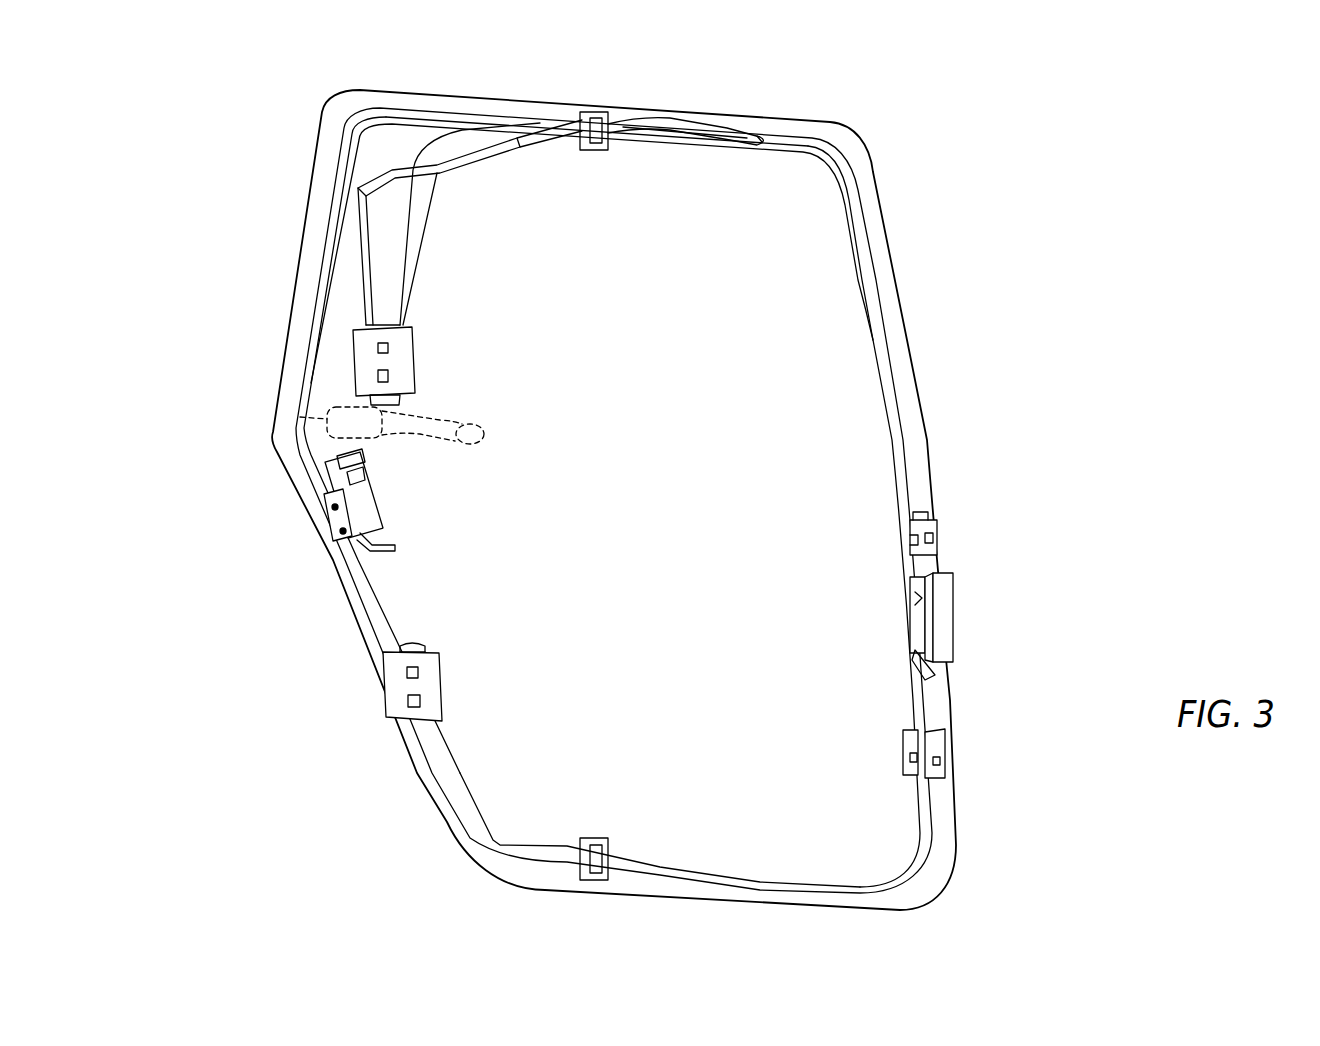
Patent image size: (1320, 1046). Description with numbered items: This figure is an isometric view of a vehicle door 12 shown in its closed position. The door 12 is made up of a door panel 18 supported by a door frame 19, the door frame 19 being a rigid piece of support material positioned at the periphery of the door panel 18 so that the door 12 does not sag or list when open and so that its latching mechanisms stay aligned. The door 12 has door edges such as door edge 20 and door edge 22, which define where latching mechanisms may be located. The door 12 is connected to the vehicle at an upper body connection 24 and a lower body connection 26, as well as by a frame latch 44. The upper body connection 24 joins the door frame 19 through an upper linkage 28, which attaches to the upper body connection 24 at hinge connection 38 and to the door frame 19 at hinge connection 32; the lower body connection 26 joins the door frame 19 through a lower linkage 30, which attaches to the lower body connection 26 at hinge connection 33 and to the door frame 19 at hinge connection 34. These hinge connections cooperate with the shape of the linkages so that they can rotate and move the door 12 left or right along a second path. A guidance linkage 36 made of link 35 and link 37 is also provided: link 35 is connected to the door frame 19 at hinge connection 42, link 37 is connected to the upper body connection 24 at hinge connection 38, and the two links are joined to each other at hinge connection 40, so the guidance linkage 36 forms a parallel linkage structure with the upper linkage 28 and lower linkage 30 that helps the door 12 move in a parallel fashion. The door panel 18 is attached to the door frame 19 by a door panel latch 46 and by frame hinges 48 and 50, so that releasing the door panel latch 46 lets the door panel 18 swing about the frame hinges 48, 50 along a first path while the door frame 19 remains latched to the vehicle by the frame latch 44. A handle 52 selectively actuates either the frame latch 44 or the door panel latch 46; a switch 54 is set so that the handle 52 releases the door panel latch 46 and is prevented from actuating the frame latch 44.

The door 12 is at (942, 147).
The door panel 18 is at (912, 330).
The door frame 19 is at (903, 398).
The door edge 20 is at (264, 470).
The door edge 22 is at (942, 476).
The upper body connection 24 is at (417, 376).
The lower body connection 26 is at (443, 675).
The upper linkage 28 is at (478, 130).
The lower linkage 30 is at (456, 760).
The hinge connection 32 is at (610, 150).
The hinge connection 33 is at (433, 620).
The hinge connection 34 is at (595, 838).
The link 35 is at (668, 118).
The guidance linkage 36 is at (472, 181).
The link 37 is at (372, 186).
The hinge connection 38 is at (428, 320).
The hinge connection 40 is at (518, 142).
The hinge connection 42 is at (765, 136).
The frame latch 44 is at (955, 622).
The door panel latch 46 is at (400, 478).
The frame hinge 48 is at (936, 521).
The frame hinge 50 is at (946, 745).
The handle 52 is at (322, 412).
The switch 54 is at (400, 546).